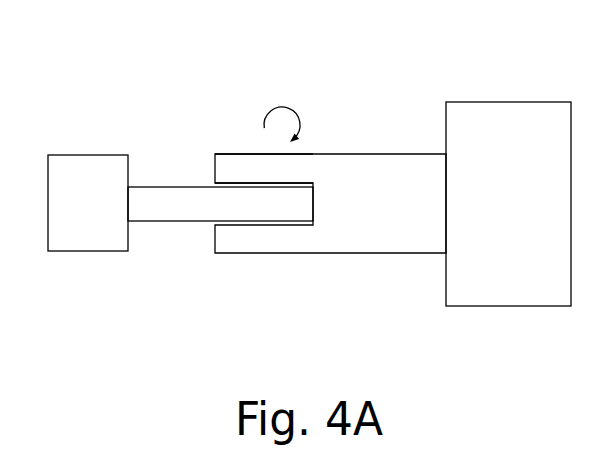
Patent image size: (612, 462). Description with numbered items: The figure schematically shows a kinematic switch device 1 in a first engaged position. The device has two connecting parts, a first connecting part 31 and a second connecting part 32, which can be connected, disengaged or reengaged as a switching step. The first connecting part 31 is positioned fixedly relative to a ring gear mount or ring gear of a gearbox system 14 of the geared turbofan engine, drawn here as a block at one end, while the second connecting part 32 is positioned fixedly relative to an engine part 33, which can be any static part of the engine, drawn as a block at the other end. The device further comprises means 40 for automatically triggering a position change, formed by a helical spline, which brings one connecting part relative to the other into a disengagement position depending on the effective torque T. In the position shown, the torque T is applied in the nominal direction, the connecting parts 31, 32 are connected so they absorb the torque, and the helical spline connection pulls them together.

The kinematic switch device 1 is at (234, 297).
The gearbox system 14 is at (500, 128).
The first connecting part 31 is at (414, 226).
The second connecting part 32 is at (180, 205).
The engine part 33 is at (90, 230).
The means for automatically triggering a position change 40 is at (227, 178).
The torque T is at (284, 107).